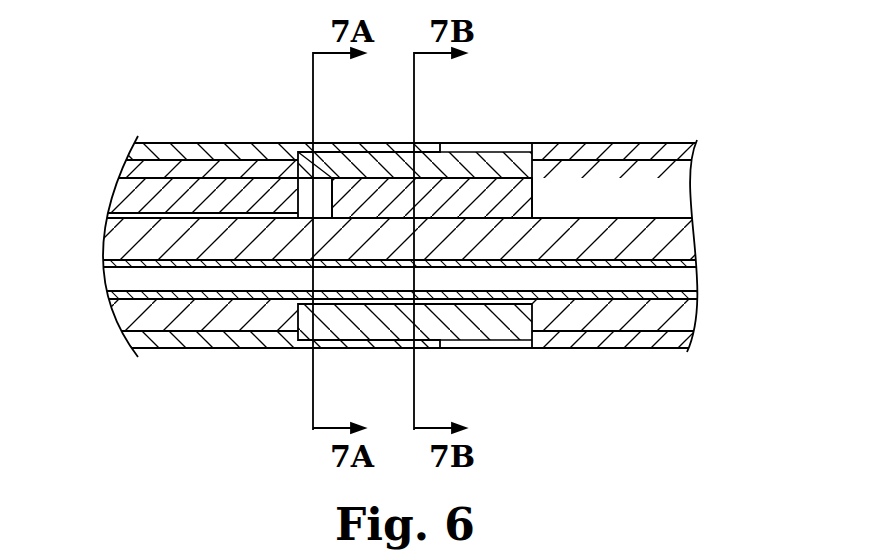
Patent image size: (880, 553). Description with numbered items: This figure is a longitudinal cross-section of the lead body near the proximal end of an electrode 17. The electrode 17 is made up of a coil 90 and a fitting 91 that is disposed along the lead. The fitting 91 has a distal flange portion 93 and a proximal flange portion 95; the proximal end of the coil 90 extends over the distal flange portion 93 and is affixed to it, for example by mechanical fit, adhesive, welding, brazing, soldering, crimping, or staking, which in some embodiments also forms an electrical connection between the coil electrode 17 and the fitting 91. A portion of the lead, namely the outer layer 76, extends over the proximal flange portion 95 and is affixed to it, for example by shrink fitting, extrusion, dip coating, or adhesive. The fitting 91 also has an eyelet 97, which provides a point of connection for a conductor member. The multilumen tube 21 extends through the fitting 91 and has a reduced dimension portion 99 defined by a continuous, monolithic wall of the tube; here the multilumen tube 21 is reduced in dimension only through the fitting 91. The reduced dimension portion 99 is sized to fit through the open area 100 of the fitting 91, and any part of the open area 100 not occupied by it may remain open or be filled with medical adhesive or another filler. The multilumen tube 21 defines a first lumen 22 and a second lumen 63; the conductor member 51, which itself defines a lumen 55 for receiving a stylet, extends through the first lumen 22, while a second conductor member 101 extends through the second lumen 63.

The electrode 17 is at (630, 150).
The multilumen tube 21 is at (119, 167).
The first lumen 22 is at (136, 266).
The conductor member 51 is at (667, 262).
The lumen 55 is at (650, 283).
The second lumen 63 is at (190, 173).
The outer layer 76 is at (219, 157).
The coil 90 is at (577, 132).
The fitting 91 is at (428, 150).
The distal flange portion 93 is at (493, 168).
The proximal flange portion 95 is at (345, 160).
The eyelet 97 is at (304, 200).
The reduced dimension portion 99 is at (467, 273).
The open area 100 is at (498, 188).
The second conductor member 101 is at (153, 193).